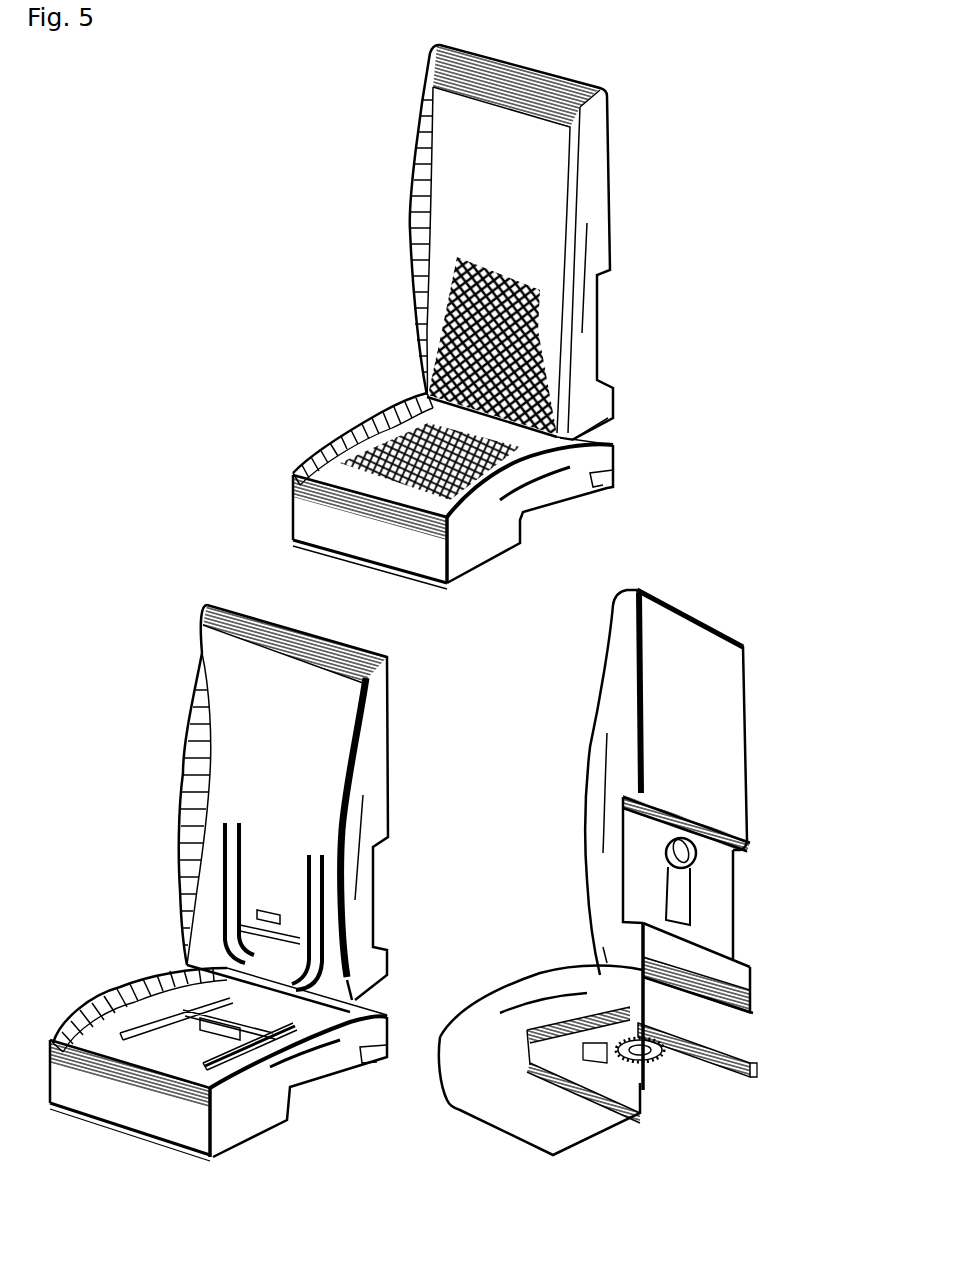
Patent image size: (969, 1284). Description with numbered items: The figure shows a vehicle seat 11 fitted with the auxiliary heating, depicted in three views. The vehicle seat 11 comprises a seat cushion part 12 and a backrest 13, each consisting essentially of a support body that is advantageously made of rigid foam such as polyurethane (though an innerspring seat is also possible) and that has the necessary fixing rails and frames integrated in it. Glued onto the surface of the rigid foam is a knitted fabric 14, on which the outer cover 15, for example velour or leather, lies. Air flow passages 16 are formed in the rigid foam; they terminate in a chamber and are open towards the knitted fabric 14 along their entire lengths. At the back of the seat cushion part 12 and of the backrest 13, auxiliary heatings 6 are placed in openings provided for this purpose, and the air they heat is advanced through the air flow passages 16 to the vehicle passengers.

The vehicle seat 11 is at (437, 595).
The seat cushion part 12 is at (363, 390).
The backrest 13 is at (504, 242).
The knitted fabric 14 is at (527, 380).
The outer cover 15 is at (507, 243).
The air flow passages 16 is at (225, 918).
The auxiliary heating 6 is at (680, 1033).